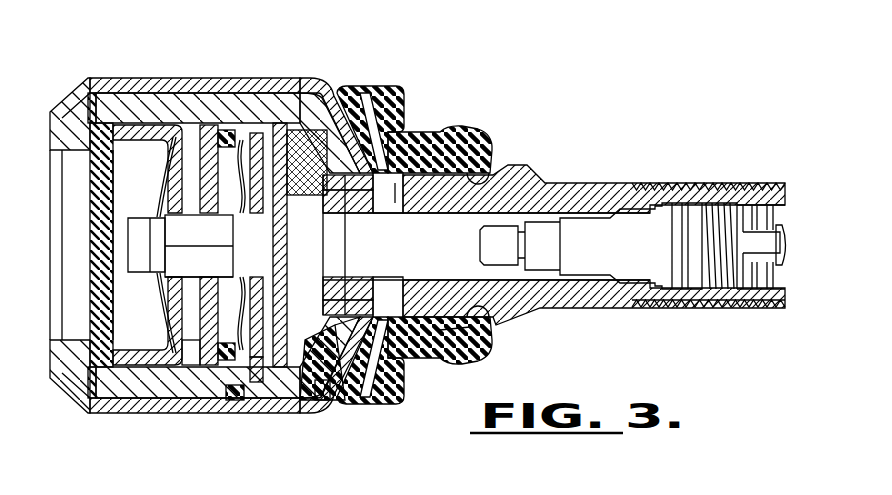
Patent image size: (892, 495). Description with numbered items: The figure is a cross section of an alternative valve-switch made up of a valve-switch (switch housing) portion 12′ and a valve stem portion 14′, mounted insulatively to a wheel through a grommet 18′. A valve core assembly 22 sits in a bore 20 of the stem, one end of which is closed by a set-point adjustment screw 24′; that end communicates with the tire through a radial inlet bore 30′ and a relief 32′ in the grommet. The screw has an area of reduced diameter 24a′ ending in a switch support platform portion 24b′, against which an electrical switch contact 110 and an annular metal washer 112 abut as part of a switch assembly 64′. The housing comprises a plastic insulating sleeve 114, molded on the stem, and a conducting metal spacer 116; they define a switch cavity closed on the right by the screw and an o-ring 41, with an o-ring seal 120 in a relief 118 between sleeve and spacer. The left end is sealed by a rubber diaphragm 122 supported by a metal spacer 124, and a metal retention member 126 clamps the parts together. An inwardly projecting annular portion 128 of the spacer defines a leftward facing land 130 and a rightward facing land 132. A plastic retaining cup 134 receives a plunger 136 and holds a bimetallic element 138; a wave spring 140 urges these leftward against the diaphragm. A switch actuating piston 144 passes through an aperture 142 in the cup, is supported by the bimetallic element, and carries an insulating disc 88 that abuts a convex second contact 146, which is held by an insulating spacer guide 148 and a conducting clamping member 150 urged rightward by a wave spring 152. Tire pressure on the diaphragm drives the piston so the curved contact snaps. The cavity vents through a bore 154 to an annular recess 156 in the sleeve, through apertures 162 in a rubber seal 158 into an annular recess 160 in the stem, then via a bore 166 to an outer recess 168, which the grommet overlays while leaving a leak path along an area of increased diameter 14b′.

The valve-switch portion 12′ is at (172, 97).
The valve stem portion 14′ is at (605, 183).
The area of increased diameter 14b′ is at (496, 324).
The grommet 18′ is at (480, 130).
The bore 20 is at (460, 253).
The valve core assembly 22 is at (630, 220).
The set-point adjustment screw 24′ is at (372, 268).
The area of reduced diameter 24a′ is at (292, 233).
The switch support platform portion 24b′ is at (292, 263).
The inlet bore 30′ is at (395, 195).
The relief 32′ is at (360, 113).
The o-ring 41 is at (330, 200).
The switch assembly 64′ is at (255, 383).
The insulating disc 88 is at (235, 223).
The electrical switch contact 110 is at (252, 215).
The annular metal washer 112 is at (336, 92).
The insulating sleeve 114 is at (295, 100).
The spacer 116 is at (112, 97).
The relief 118 is at (222, 412).
The o-ring seal 120 is at (233, 400).
The rubber diaphragm 122 is at (78, 177).
The spacer 124 is at (78, 345).
The retention member 126 is at (72, 393).
The inwardly projecting annular portion 128 is at (213, 347).
The leftward facing land 130 is at (183, 200).
The rightward facing land 132 is at (236, 267).
The retaining cup 134 is at (160, 370).
The plunger 136 is at (90, 235).
The bimetallic element 138 is at (170, 167).
The wave spring 140 is at (192, 318).
The aperture 142 is at (170, 283).
The switch actuating piston 144 is at (218, 249).
The second contact 146 is at (323, 167).
The insulating spacer guide 148 is at (267, 133).
The clamping member 150 is at (240, 143).
The wave spring 152 is at (220, 157).
The bore 154 is at (323, 387).
The annular recess 156 is at (350, 330).
The rubber seal 158 is at (317, 345).
The annular recess 160 is at (407, 355).
The apertures 162 is at (372, 360).
The bore 166 is at (448, 360).
The recess 168 is at (492, 340).